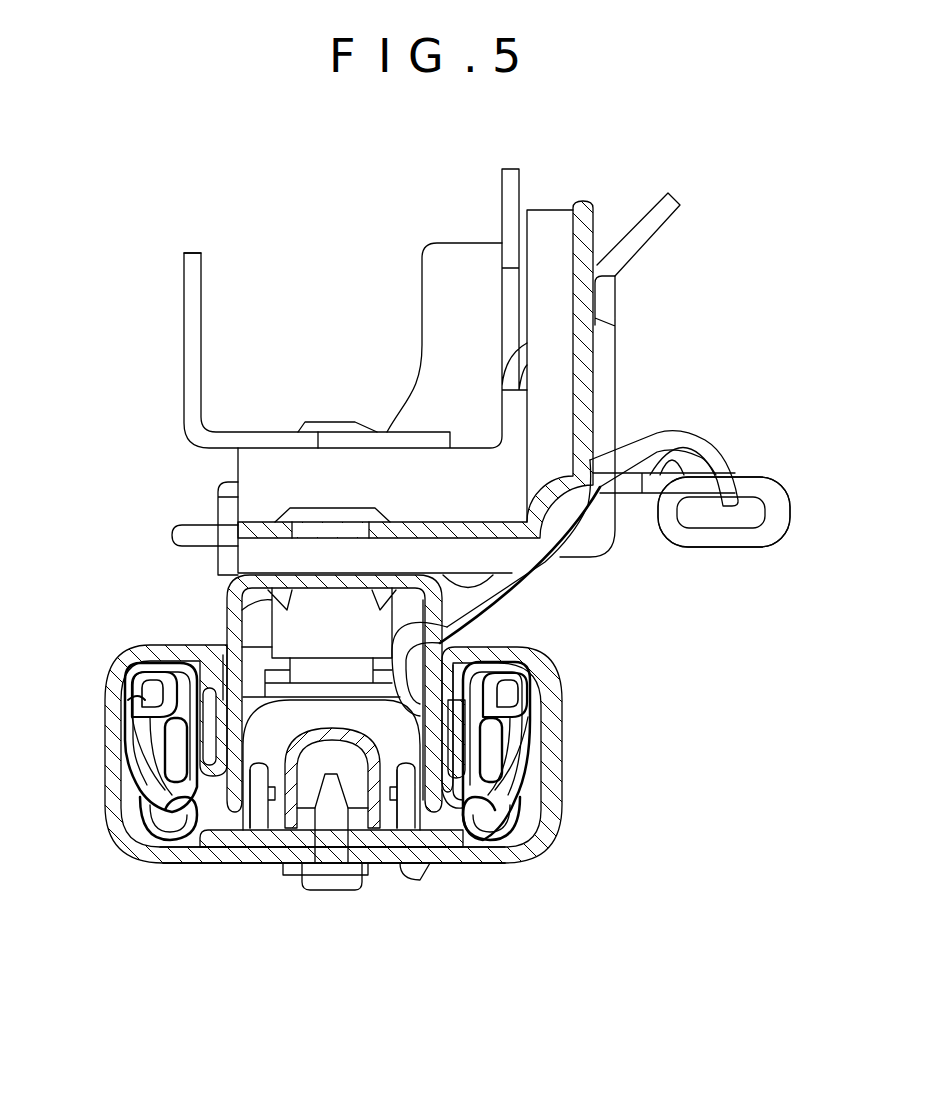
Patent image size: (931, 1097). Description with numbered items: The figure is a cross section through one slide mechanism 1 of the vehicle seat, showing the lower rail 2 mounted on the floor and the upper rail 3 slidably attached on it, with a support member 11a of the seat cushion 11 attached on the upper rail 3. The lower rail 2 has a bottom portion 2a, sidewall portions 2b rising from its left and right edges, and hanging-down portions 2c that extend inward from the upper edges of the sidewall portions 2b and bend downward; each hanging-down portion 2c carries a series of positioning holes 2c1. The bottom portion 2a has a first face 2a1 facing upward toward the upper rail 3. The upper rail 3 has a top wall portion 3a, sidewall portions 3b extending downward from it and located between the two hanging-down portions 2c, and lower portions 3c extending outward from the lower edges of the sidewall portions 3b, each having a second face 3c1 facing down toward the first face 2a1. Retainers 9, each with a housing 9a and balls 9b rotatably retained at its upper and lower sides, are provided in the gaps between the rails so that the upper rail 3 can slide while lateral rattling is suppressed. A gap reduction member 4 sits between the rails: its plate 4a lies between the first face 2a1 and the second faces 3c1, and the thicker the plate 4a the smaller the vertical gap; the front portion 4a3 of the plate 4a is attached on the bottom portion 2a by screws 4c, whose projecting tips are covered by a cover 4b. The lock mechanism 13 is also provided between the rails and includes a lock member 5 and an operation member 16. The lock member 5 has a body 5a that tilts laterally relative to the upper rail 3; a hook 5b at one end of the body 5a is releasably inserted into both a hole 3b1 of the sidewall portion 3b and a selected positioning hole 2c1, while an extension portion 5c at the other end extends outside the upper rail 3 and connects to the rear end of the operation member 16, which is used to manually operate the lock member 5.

The slide mechanism 1 is at (64, 552).
The lower rail 2 is at (104, 690).
The bottom portion 2a is at (372, 873).
The first face 2a1 is at (372, 846).
The sidewall portion 2b is at (107, 728).
The hanging-down portion 2c is at (382, 919).
The positioning hole 2c1 is at (510, 863).
The upper rail 3 is at (227, 603).
The top wall portion 3a is at (342, 582).
The sidewall portion 3b is at (219, 609).
The hole 3b1 is at (433, 710).
The lower portion 3c is at (135, 798).
The second face 3c1 is at (215, 843).
The gap reduction member 4 is at (287, 736).
The plate 4a is at (262, 873).
The front portion 4a3 is at (250, 833).
The cover 4b is at (338, 732).
The screw 4c is at (328, 880).
The lock member 5 is at (666, 418).
The body 5a is at (507, 600).
The hook 5b is at (457, 641).
The extension portion 5c is at (547, 570).
The retainer 9 is at (125, 660).
The housing 9a is at (122, 766).
The ball 9b is at (150, 655).
The seat cushion 11 is at (170, 364).
The support member 11a is at (277, 555).
The lock mechanism 13 is at (756, 481).
The operation member 16 is at (765, 490).